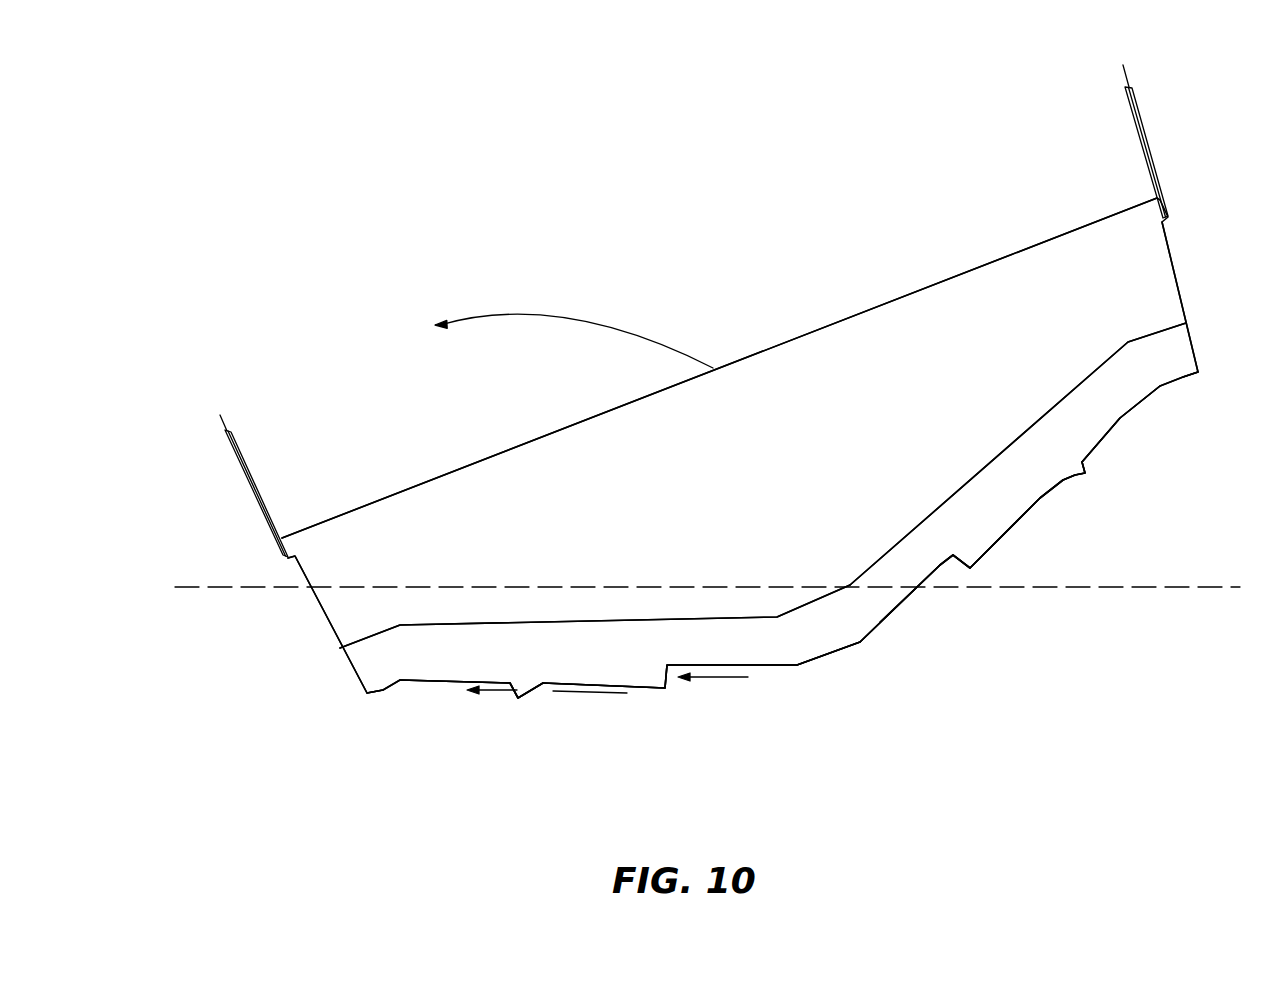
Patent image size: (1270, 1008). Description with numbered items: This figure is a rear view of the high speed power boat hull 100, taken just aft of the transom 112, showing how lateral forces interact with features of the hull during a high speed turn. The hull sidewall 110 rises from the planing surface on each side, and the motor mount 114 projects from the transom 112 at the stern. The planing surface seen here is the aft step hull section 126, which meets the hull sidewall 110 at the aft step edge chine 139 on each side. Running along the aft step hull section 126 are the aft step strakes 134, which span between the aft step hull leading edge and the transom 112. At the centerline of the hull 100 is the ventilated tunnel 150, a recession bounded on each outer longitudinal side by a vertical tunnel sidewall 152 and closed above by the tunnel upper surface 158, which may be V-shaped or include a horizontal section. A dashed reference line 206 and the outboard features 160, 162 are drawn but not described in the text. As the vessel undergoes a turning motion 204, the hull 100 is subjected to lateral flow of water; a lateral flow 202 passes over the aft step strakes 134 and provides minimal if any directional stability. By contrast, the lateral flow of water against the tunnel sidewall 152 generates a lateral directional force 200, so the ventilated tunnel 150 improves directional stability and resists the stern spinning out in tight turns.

The high speed power boat hull 100 is at (1185, 774).
The hull sidewall 110 is at (303, 573).
The transom 112 is at (1032, 452).
The motor mount 114 is at (782, 390).
The aft step hull section 126 is at (435, 681).
The aft step strakes 134 is at (518, 698).
The aft step edge chine 139 is at (383, 693).
The ventilated tunnel 150 is at (832, 656).
The tunnel sidewall 152 is at (667, 672).
The tunnel upper surface 158 is at (913, 595).
The second blade 160 is at (1133, 148).
The first blade 162 is at (261, 414).
The lateral directional force 200 is at (712, 680).
The lateral flow 202 is at (556, 692).
The turning motion 204 is at (590, 325).
The reference plane 206 is at (1120, 587).